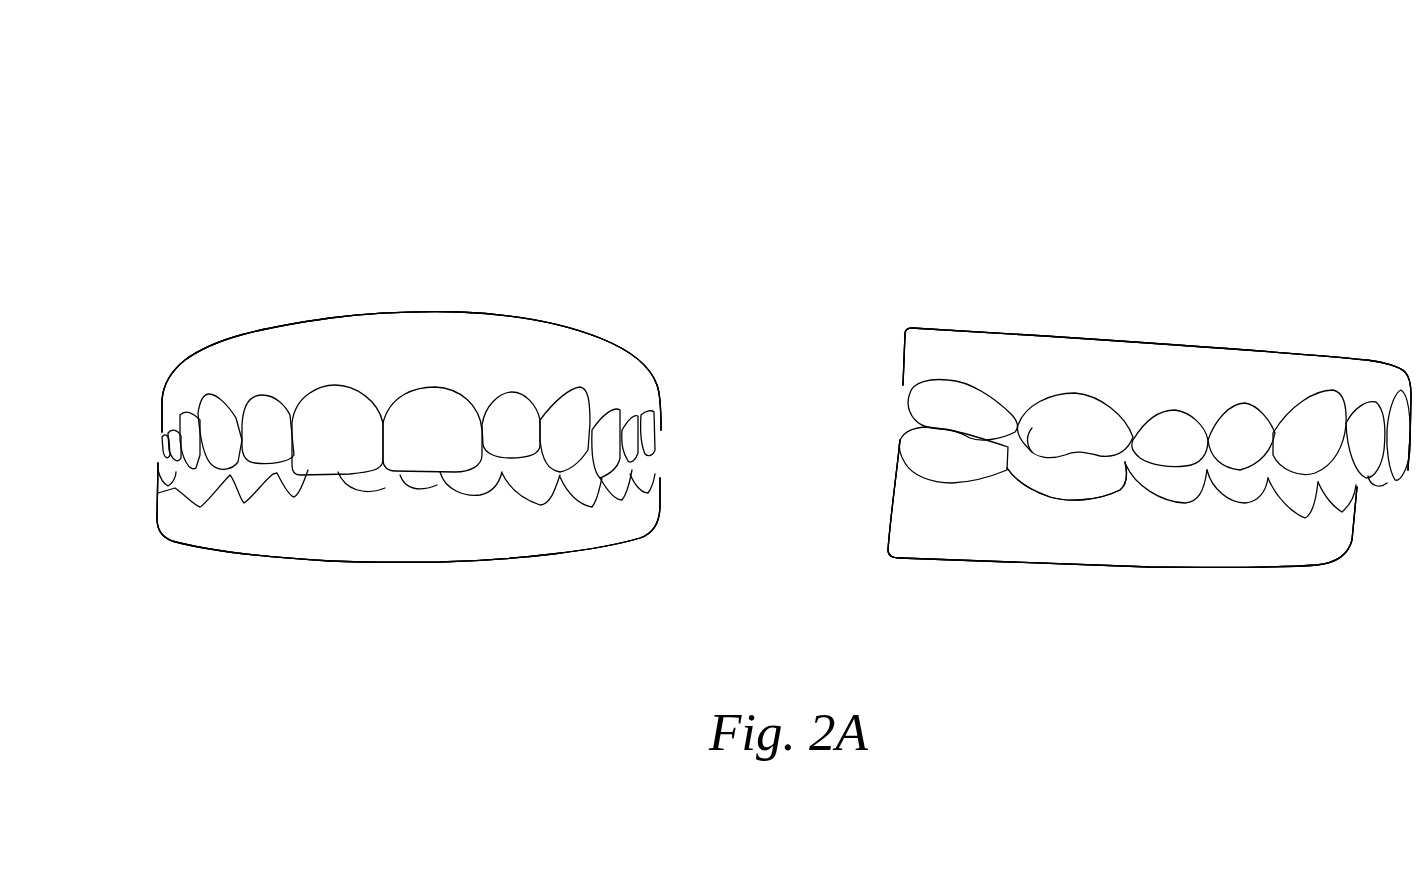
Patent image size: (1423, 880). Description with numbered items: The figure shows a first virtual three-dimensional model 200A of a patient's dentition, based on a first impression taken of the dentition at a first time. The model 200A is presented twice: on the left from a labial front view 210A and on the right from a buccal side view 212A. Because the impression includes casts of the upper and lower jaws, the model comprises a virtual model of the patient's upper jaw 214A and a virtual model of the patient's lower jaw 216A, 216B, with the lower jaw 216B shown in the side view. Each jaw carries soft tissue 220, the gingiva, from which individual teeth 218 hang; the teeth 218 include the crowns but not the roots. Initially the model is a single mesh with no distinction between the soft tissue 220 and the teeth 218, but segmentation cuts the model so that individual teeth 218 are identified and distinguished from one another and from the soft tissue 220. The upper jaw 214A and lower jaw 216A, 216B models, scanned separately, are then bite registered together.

The first virtual 3D model 200A is at (172, 56).
The labial front view 210A is at (230, 218).
The buccal side view 212A is at (980, 218).
The 3D virtual model of the patient's upper jaw 214A is at (150, 402).
The 3D virtual model of the patient's lower jaw 216A is at (145, 518).
The 3D virtual model of the patient's lower jaw 216B is at (873, 503).
The teeth 218 is at (412, 443).
The soft tissue 220 is at (432, 371).